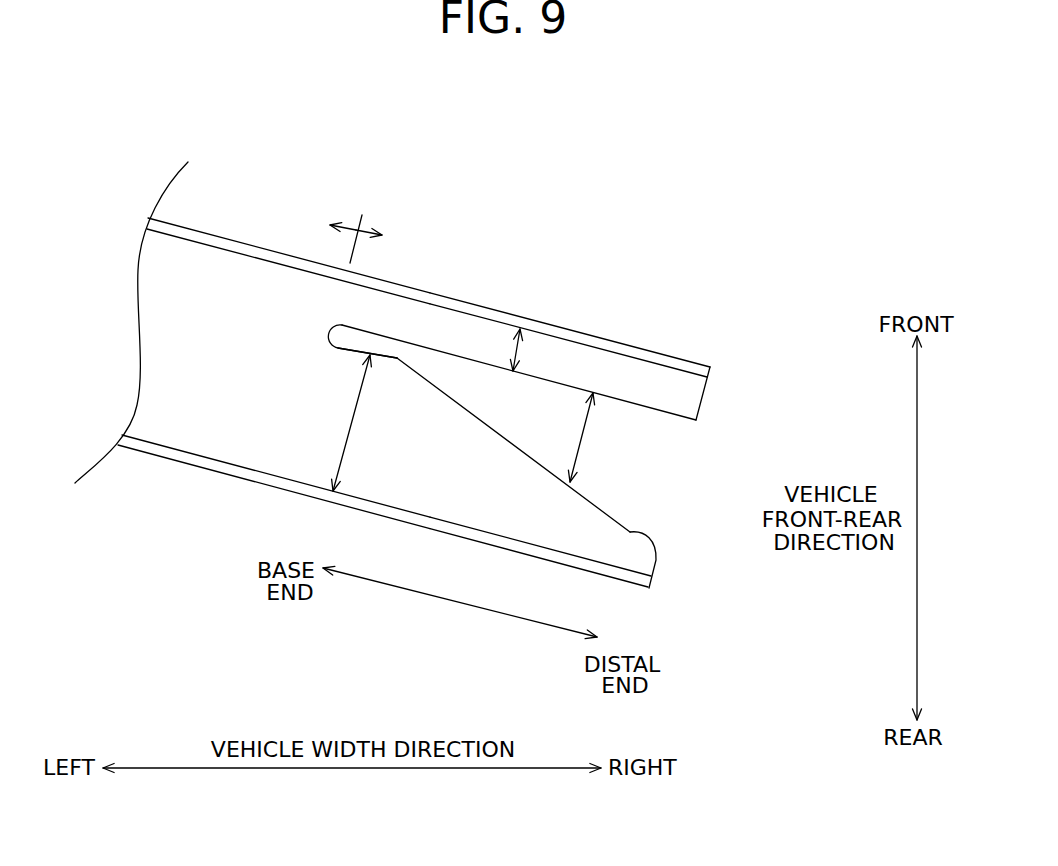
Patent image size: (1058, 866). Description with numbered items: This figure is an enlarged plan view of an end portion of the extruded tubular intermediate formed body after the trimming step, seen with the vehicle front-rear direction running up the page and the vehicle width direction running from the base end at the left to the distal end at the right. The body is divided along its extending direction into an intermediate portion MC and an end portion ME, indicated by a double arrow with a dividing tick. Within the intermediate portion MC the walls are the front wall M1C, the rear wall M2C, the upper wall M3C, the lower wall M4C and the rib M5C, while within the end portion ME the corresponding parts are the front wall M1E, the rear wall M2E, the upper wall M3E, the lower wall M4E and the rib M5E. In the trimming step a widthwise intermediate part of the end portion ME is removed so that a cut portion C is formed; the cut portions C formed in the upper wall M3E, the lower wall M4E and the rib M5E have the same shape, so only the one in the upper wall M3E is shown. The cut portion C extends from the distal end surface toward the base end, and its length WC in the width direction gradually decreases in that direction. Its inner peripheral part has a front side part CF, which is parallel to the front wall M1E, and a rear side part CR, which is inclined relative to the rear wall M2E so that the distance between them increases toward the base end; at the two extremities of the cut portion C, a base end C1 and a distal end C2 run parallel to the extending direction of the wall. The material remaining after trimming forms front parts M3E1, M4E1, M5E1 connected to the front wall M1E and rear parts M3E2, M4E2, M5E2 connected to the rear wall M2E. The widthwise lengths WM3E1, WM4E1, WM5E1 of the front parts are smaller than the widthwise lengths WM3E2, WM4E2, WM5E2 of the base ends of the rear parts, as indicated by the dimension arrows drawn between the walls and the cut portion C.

The front wall M1C is at (227, 238).
The front wall M1E is at (570, 328).
The rear wall M2C is at (167, 459).
The rear wall M2E is at (573, 568).
The upper wall M3C is at (252, 315).
The lower wall M4C is at (252, 315).
The rib M5C is at (212, 355).
The upper wall M3E is at (763, 342).
The lower wall M4E is at (763, 342).
The rib M5E is at (681, 402).
The front part M3E1 is at (514, 250).
The front part M4E1 is at (514, 250).
The front part M5E1 is at (423, 323).
The rear part M3E2 is at (696, 592).
The rear part M4E2 is at (696, 592).
The rear part M5E2 is at (595, 537).
The intermediate portion MC is at (326, 237).
The end portion ME is at (387, 244).
The length of front part WM3E1 is at (618, 254).
The length of front part WM4E1 is at (618, 254).
The length of front part WM5E1 is at (503, 312).
The length of rear part base end WM3E2 is at (264, 453).
The length of rear part base end WM4E2 is at (264, 453).
The length of rear part base end WM5E2 is at (345, 428).
The length of cut portion WC is at (571, 437).
The cut portion C is at (556, 456).
The front side part CF is at (502, 372).
The rear side part CR is at (512, 433).
The base end C1 is at (395, 351).
The distal end C2 is at (670, 488).